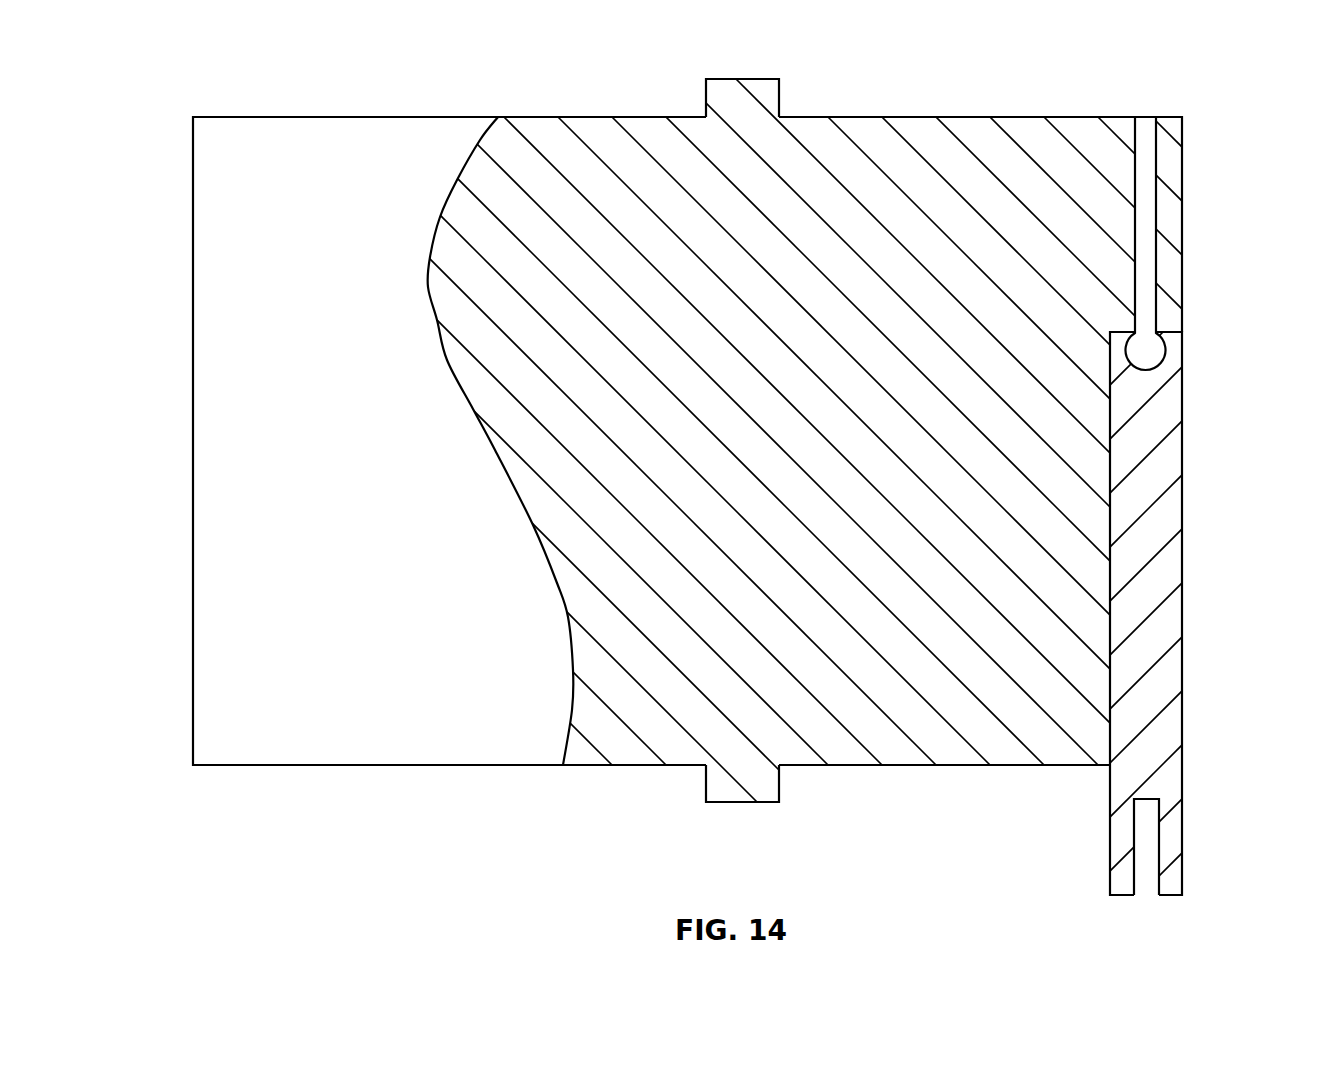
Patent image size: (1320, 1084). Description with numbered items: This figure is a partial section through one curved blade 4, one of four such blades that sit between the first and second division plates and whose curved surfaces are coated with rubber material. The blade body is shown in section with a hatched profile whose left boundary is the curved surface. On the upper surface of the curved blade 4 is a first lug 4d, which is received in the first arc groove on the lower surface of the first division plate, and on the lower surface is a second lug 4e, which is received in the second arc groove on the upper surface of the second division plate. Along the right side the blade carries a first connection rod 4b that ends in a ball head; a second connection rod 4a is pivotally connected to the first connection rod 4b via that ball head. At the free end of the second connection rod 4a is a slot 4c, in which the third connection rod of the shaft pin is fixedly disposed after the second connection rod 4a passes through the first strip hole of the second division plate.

The curved blade 4 is at (288, 398).
The second connection rod 4a is at (1147, 542).
The first connection rod 4b is at (1147, 188).
The slot 4c is at (1145, 878).
The first lug 4d is at (763, 93).
The second lug 4e is at (758, 791).